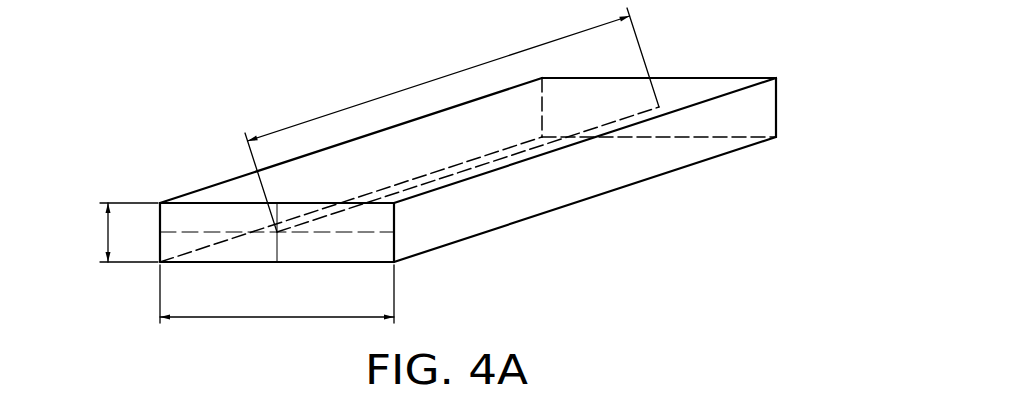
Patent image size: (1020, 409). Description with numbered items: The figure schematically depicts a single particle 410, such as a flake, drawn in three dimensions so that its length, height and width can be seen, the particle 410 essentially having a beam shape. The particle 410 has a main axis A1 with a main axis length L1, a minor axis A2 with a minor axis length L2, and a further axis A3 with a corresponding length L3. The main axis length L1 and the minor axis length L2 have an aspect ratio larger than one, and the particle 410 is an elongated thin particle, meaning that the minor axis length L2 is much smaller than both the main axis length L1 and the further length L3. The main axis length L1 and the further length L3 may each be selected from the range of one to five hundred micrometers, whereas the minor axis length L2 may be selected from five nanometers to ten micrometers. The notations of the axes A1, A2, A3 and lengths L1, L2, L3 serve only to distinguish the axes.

The particle 410 is at (790, 50).
The main axis length L1 is at (431, 80).
The minor axis length L2 is at (108, 232).
The further axis length L3 is at (275, 317).
The main axis A1 is at (508, 158).
The minor axis A2 is at (277, 247).
The further axis A3 is at (352, 233).